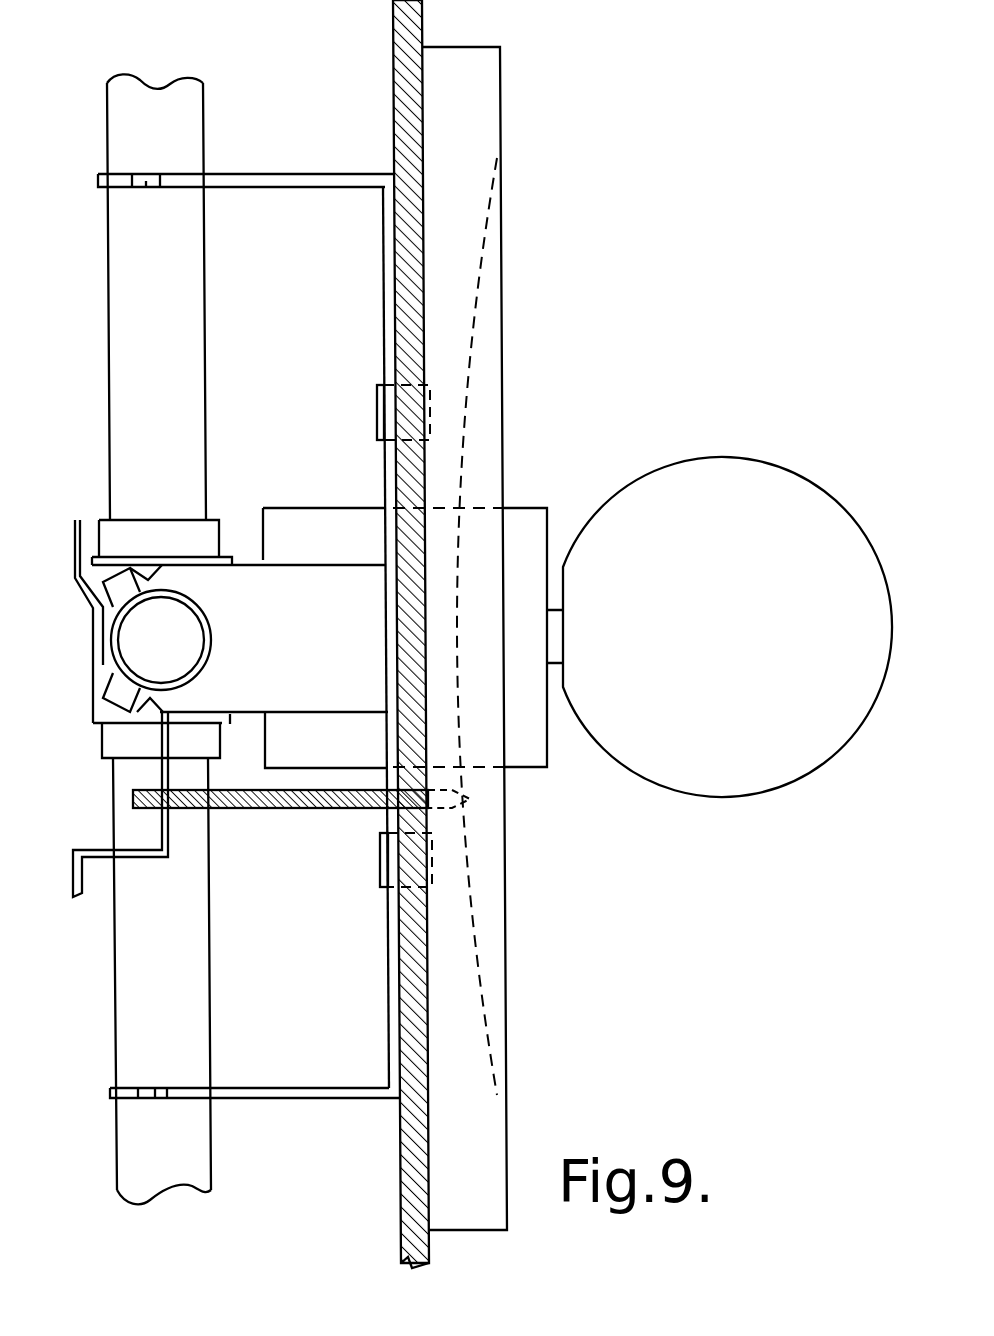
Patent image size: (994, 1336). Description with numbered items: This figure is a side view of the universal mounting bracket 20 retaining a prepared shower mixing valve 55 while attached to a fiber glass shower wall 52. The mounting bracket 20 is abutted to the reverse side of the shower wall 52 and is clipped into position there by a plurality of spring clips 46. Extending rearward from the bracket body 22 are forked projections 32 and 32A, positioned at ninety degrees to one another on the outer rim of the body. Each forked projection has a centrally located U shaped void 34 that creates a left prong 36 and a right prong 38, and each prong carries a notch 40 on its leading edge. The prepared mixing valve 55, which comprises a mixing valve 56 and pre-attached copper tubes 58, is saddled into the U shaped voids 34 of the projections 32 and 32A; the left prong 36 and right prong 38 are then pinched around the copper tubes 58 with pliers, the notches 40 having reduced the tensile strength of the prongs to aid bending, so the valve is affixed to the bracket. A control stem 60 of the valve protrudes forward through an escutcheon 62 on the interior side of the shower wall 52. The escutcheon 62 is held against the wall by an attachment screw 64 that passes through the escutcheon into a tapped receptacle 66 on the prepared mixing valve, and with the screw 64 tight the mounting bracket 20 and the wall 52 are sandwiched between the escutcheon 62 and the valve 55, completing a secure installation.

The universal mounting bracket 20 is at (328, 140).
The bracket body 22 is at (382, 280).
The forked projection 32 is at (316, 590).
The forked projection 32A is at (327, 1098).
The U shaped void 34 is at (208, 613).
The left prong 36 is at (110, 1093).
The right prong 38 is at (97, 704).
The notch 40 is at (150, 1098).
The spring clip 46 is at (432, 865).
The fiber glass shower wall 52 is at (400, 1188).
The prepared shower mixing valve 55 is at (248, 490).
The mixing valve 56 is at (92, 663).
The copper tube 58 is at (208, 932).
The control stem 60 is at (533, 508).
The escutcheon 62 is at (500, 112).
The attachment screw 64 is at (470, 793).
The tapped receptacle 66 is at (192, 808).